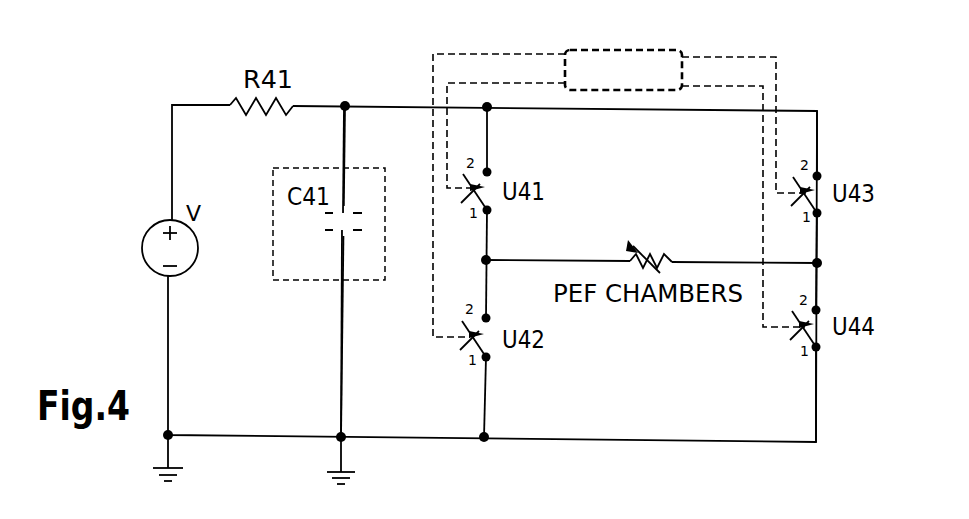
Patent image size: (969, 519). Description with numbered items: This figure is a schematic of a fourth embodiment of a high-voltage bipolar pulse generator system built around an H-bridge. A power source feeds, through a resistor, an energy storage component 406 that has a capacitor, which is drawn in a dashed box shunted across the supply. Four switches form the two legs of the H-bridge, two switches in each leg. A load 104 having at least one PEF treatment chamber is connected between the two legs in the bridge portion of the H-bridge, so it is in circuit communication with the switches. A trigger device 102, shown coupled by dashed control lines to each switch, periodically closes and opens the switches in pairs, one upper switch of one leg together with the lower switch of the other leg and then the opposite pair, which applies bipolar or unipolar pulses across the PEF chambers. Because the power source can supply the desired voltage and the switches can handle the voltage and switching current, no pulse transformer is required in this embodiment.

The trigger device 102 is at (620, 50).
The load 104 is at (668, 261).
The energy storage component 406 is at (313, 282).